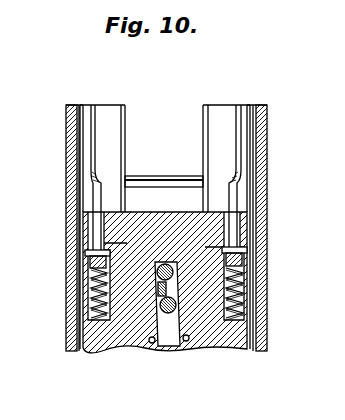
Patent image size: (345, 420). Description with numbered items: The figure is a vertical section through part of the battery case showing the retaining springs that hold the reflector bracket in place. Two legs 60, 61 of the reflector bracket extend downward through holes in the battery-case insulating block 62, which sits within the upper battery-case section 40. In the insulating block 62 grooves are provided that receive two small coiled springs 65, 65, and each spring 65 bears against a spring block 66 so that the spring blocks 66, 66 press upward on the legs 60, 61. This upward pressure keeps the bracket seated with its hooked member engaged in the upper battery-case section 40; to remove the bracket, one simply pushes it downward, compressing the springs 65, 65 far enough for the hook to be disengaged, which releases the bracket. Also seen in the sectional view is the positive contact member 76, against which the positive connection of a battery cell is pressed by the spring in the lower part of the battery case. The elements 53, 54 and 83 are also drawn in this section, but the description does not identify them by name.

The upper battery-case section 40 is at (267, 193).
The detent ball 53 is at (163, 264).
The lower ball 54 is at (167, 347).
The leg 60 is at (225, 128).
The leg 61 is at (121, 137).
The battery-case insulating block 62 is at (240, 343).
The coiled spring 65 is at (88, 303).
The spring block 66 is at (86, 254).
The positive contact member 76 is at (188, 342).
The plate 83 is at (166, 176).